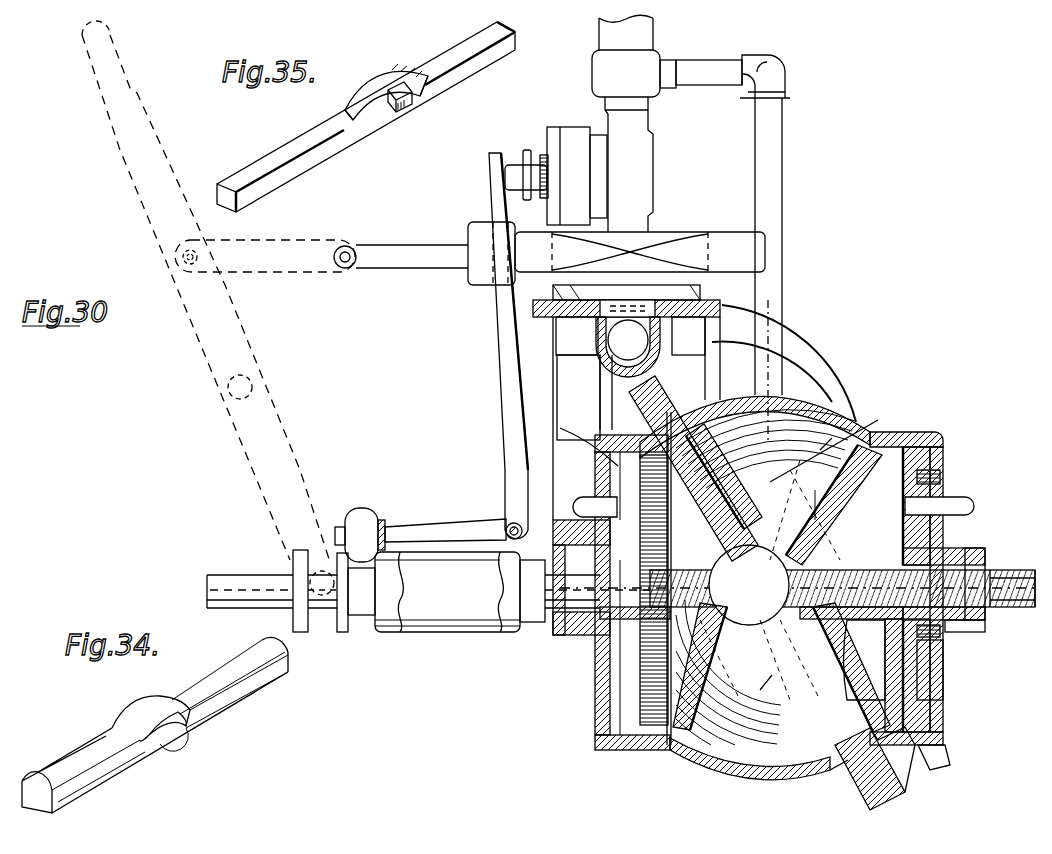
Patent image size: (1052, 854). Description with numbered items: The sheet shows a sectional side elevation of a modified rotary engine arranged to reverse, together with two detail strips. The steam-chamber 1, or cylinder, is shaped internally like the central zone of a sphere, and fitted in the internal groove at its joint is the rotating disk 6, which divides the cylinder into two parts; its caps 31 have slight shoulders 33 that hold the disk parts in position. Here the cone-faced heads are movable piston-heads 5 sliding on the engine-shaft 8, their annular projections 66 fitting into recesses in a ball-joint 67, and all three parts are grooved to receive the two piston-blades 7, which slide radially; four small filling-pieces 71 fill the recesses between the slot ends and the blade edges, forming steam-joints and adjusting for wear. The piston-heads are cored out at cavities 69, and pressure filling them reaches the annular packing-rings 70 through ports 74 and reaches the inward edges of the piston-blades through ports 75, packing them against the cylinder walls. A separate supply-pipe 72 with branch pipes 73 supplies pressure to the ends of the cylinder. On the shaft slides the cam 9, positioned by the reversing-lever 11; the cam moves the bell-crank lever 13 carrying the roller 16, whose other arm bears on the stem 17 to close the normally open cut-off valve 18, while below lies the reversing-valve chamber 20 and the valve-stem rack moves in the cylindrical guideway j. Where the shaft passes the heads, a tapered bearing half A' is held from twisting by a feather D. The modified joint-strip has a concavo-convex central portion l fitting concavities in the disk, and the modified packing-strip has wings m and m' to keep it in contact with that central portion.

In FIG. 30, the steam-chamber 1 is at (738, 782).
In FIG. 30, the movable piston-heads 5 is at (850, 690).
In FIG. 30, the disk 6 is at (706, 430).
In FIG. 30, the piston-blades 7 is at (598, 660).
In FIG. 30, the engine-shaft 8 is at (1009, 576).
In FIG. 30, the cam 9 is at (428, 591).
In FIG. 30, the reversing-lever 11 is at (206, 291).
In FIG. 30, the bell-crank lever 13 is at (504, 441).
In FIG. 30, the roller 16 is at (372, 512).
In FIG. 30, the stem 17 is at (508, 168).
In FIG. 30, the cut-off valve 18 is at (636, 123).
In FIG. 30, the reversing-valve chamber 20 is at (626, 283).
In FIG. 30, the caps 31 is at (832, 772).
In FIG. 30, the shoulders 33 is at (652, 380).
In FIG. 30, the annular projections 66 is at (756, 650).
In FIG. 30, the ball-joint 67 is at (760, 690).
In FIG. 30, the cavities 69 is at (945, 668).
In FIG. 30, the annular packing-rings 70 is at (942, 442).
In FIG. 30, the filling-pieces 71 is at (912, 442).
In FIG. 30, the supply-pipe 72 is at (762, 183).
In FIG. 30, the branch pipes 73 is at (813, 491).
In FIG. 30, the ports 74 is at (985, 455).
In FIG. 30, the ports 75 is at (946, 484).
In FIG. 30, the cylindrical guideway j is at (719, 240).
In FIG. 30, the standard b is at (574, 397).
In FIG. 30, the bracket arm b' is at (784, 363).
In FIG. 35, the wing m is at (386, 81).
In FIG. 30, the wing m is at (579, 437).
In FIG. 35, the wing m' is at (417, 102).
In FIG. 30, the wing m' is at (812, 454).
In FIG. 34, the concavo-convex central portion l is at (155, 725).
In FIG. 30, the tapered bearing half A' is at (965, 562).
In FIG. 30, the feather D is at (985, 616).